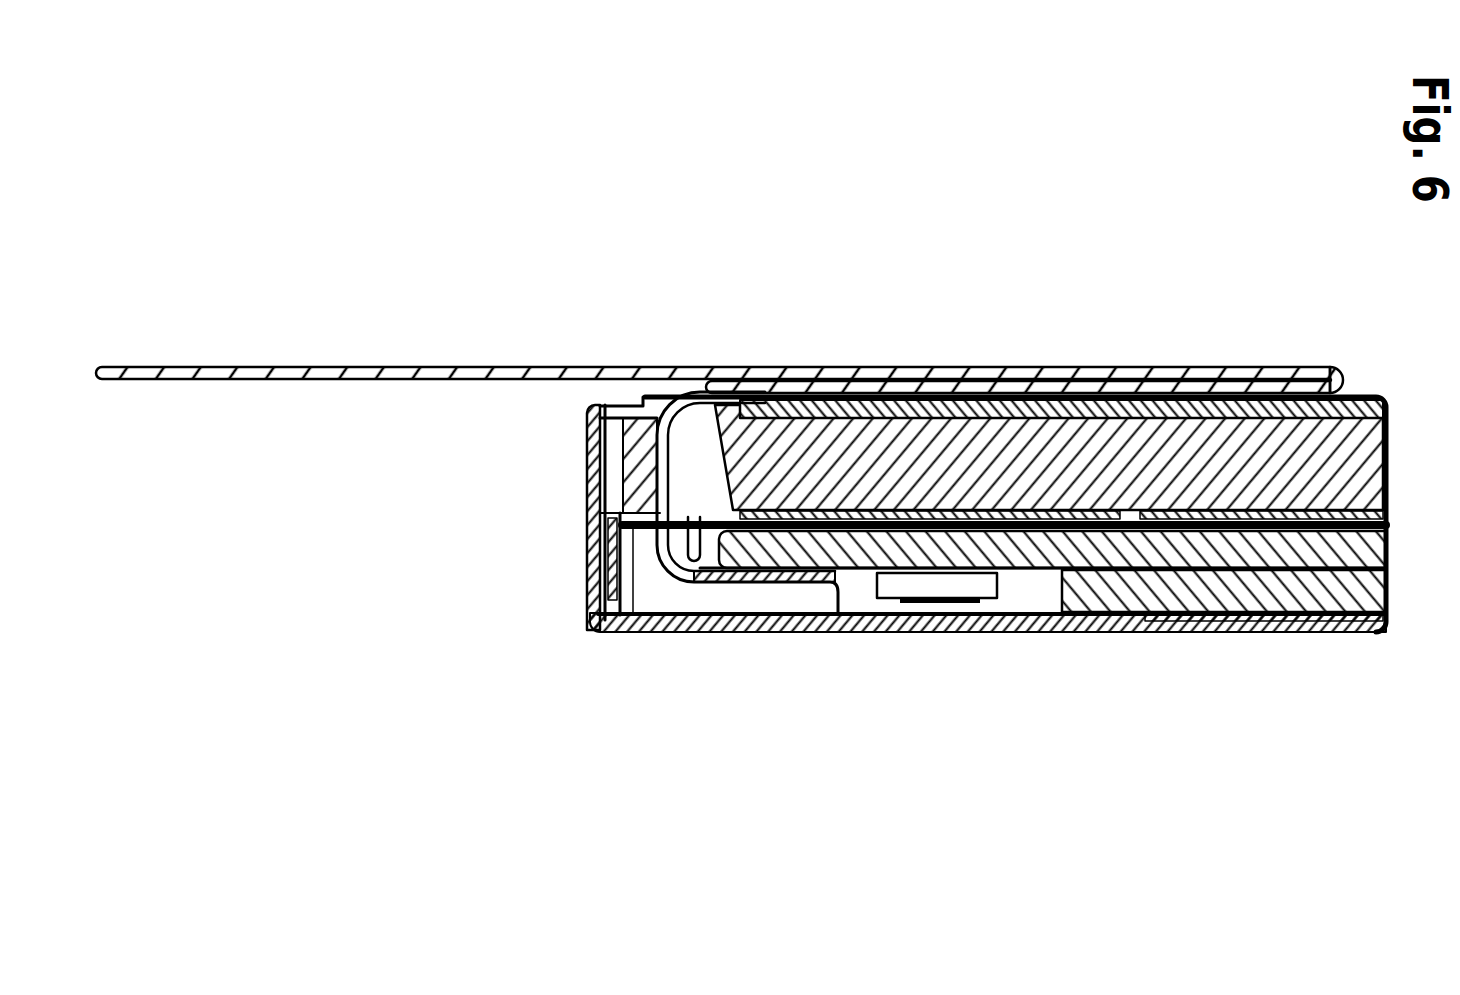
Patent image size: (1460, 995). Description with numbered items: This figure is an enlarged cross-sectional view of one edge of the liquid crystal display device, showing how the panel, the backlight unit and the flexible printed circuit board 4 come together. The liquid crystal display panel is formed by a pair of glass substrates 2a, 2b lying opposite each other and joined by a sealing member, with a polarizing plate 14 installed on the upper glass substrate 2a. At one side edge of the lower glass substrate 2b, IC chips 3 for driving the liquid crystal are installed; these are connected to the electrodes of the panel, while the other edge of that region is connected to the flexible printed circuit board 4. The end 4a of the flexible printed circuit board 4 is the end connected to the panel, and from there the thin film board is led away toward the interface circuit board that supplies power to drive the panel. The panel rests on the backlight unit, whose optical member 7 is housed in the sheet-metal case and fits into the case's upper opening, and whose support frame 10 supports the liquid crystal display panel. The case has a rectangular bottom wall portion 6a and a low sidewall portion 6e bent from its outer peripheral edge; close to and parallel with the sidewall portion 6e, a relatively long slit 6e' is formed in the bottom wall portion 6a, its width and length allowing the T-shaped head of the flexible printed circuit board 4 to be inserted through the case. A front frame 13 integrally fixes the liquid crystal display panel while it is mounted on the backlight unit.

The glass substrate 2a is at (1310, 588).
The glass substrate 2b is at (1124, 548).
The IC chip 3 is at (983, 585).
The flexible printed circuit board 4 is at (1165, 366).
The end of flexible printed circuit board 4a is at (840, 585).
The bottom wall portion 6a is at (1348, 372).
The sidewall portion 6e is at (556, 517).
The slit 6e' is at (747, 461).
The optical member 7 is at (1055, 428).
The support frame 10 is at (875, 503).
The front frame 13 is at (927, 627).
The polarizing plate 14 is at (1238, 630).